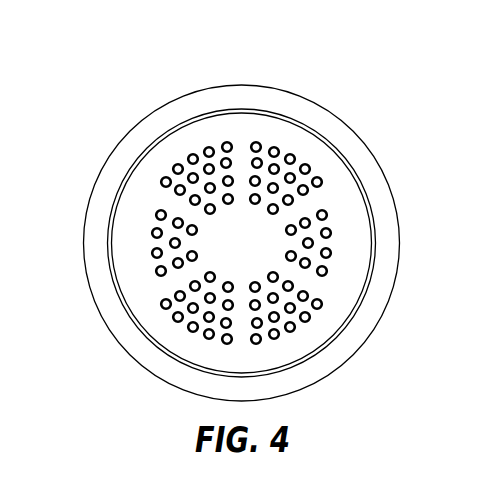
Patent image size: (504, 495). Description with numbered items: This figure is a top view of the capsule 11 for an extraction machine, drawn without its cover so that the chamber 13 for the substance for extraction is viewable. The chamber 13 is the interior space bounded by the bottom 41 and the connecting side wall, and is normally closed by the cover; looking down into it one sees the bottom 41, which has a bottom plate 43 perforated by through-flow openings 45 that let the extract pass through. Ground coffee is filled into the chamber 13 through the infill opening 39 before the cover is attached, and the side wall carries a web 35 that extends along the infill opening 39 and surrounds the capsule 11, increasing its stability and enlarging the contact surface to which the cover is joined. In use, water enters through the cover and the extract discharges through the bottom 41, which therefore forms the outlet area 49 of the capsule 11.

The capsule 11 is at (112, 129).
The chamber 13 is at (323, 160).
The web 35 is at (300, 108).
The infill opening 39 is at (110, 237).
The bottom 41 is at (247, 145).
The bottom plate 43 is at (199, 143).
The through-flow openings 45 is at (327, 180).
The outlet area 49 is at (198, 184).